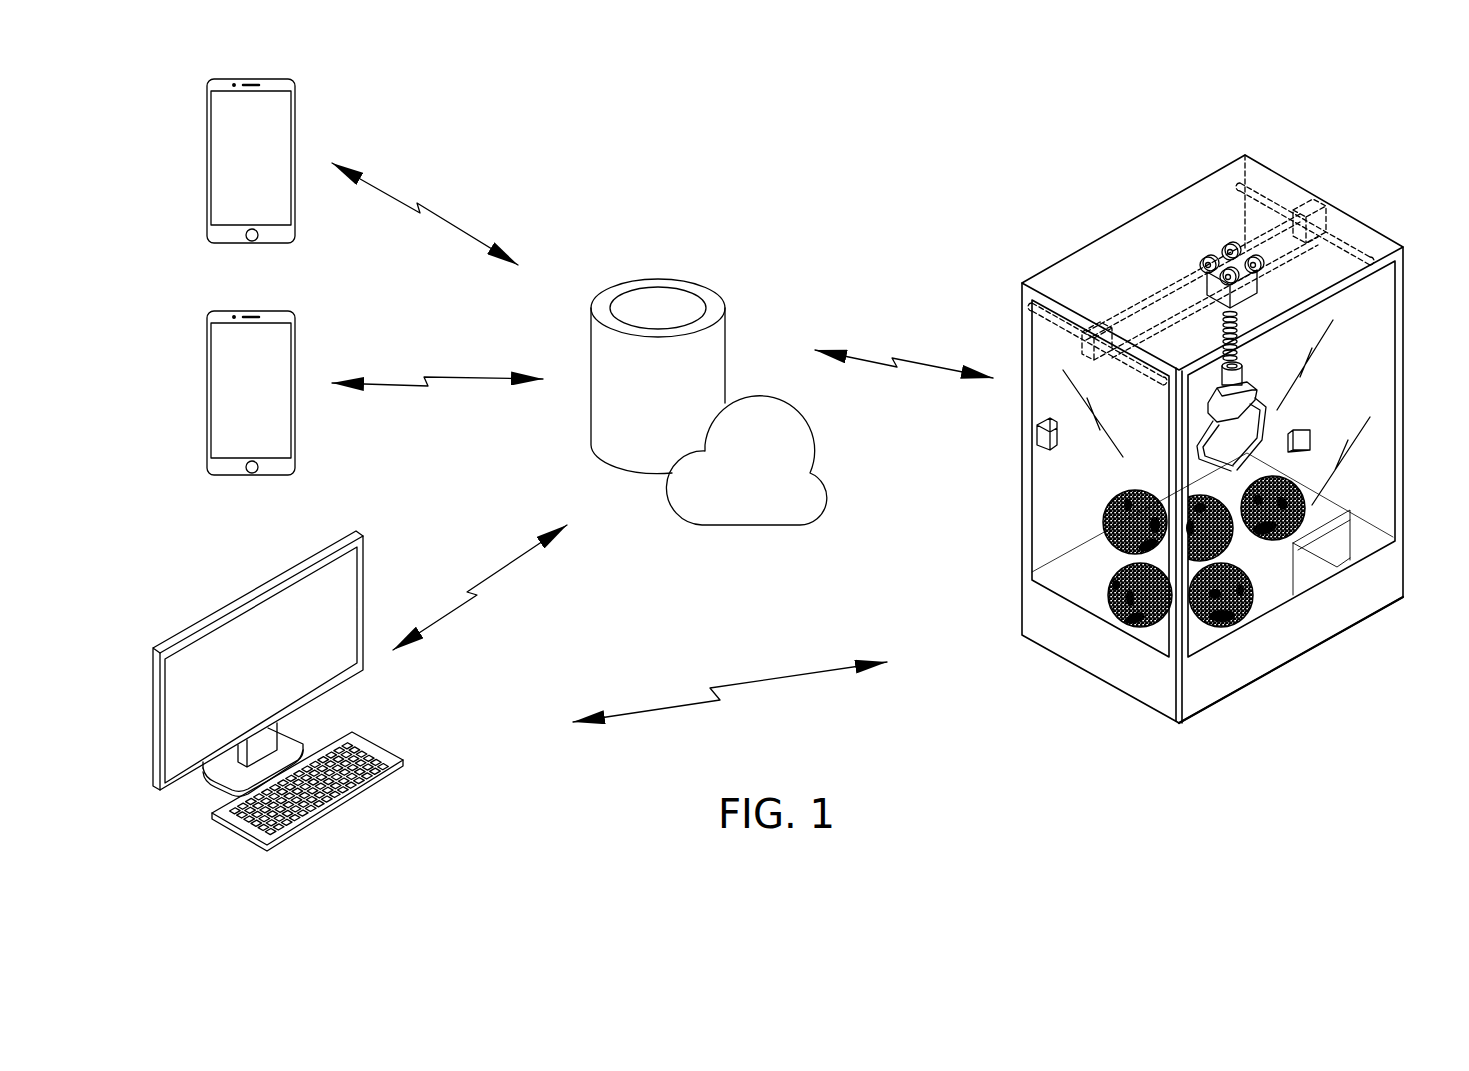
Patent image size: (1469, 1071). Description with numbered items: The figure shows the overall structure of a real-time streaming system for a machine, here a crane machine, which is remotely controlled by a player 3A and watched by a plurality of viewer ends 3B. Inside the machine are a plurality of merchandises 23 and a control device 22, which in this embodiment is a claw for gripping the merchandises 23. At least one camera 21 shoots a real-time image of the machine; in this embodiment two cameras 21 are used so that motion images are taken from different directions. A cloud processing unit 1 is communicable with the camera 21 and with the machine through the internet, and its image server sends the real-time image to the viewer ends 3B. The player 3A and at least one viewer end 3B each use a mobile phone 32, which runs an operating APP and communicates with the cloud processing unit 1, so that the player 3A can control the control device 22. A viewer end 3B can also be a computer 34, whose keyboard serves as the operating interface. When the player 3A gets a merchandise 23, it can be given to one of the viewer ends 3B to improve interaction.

The cloud processing unit 1 is at (703, 348).
The player 3A is at (182, 121).
The viewer ends 3B is at (182, 369).
The mobile phone 32 is at (207, 160).
The computer 34 is at (387, 770).
The camera 21 is at (1312, 438).
The control device 22 is at (1270, 410).
The merchandises 23 is at (1107, 523).